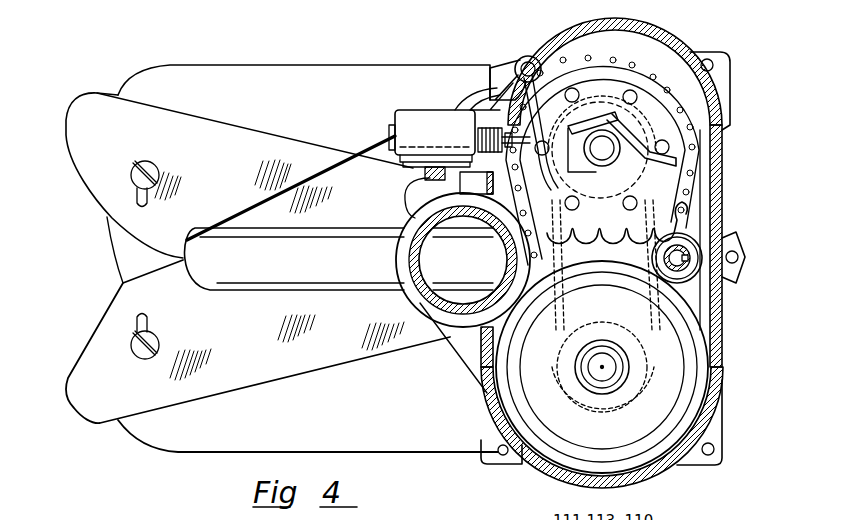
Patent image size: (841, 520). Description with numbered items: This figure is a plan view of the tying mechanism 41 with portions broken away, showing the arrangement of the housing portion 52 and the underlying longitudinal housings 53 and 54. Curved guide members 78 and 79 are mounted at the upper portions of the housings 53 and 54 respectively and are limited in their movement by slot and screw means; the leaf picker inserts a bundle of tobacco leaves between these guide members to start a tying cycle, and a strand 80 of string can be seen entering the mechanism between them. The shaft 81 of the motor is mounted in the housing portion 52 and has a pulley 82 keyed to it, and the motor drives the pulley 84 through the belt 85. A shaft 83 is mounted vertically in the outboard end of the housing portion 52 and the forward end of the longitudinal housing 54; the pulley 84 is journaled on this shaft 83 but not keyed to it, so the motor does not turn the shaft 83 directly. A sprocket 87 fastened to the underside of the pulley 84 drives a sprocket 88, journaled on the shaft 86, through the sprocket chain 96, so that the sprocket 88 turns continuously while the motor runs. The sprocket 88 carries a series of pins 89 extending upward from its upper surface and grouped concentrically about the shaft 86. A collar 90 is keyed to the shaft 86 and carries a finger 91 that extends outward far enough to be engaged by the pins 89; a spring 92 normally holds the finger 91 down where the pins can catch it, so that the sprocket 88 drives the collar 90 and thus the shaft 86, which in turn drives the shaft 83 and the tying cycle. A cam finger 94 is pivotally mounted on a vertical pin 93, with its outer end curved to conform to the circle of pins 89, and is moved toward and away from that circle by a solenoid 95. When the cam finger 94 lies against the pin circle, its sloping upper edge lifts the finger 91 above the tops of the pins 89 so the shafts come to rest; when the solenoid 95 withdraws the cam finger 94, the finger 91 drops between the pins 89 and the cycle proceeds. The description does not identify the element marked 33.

The ring bearing 33 is at (449, 323).
The tying mechanism 41 is at (335, 82).
The housing portion 52 is at (717, 186).
The longitudinal housing 53 is at (373, 80).
The longitudinal housing 54 is at (200, 443).
The curved guide member 78 is at (88, 148).
The curved guide member 79 is at (105, 345).
The strand of string 80 is at (300, 176).
The motor shaft 81 is at (690, 249).
The pulley 82 is at (692, 270).
The shaft 83 is at (603, 367).
The pulley 84 is at (662, 398).
The belt 85 is at (695, 318).
The shaft 86 is at (621, 115).
The sprocket 87 is at (529, 456).
The sprocket 88 is at (655, 95).
The pins 89 is at (727, 66).
The collar 90 is at (574, 160).
The finger 91 is at (678, 162).
The spring 92 is at (598, 125).
The vertical pin 93 is at (528, 56).
The cam finger 94 is at (498, 95).
The solenoid 95 is at (422, 122).
The sprocket chain 96 is at (678, 221).